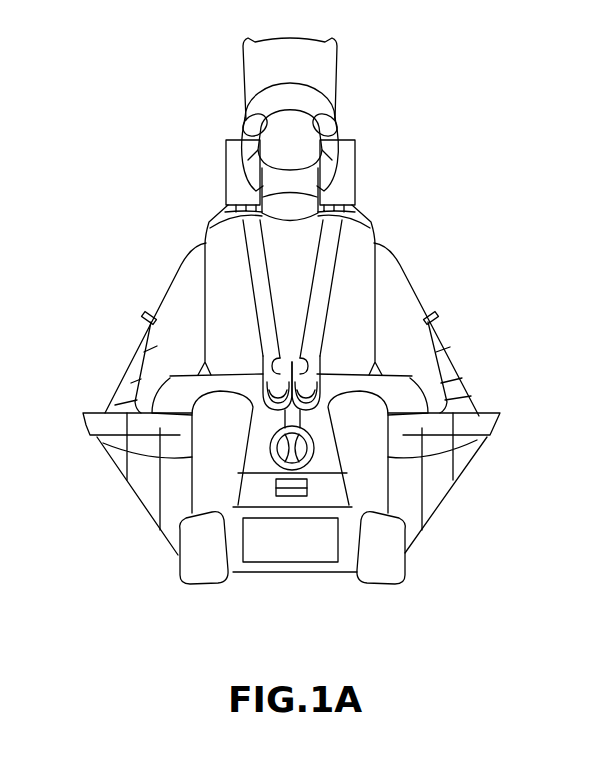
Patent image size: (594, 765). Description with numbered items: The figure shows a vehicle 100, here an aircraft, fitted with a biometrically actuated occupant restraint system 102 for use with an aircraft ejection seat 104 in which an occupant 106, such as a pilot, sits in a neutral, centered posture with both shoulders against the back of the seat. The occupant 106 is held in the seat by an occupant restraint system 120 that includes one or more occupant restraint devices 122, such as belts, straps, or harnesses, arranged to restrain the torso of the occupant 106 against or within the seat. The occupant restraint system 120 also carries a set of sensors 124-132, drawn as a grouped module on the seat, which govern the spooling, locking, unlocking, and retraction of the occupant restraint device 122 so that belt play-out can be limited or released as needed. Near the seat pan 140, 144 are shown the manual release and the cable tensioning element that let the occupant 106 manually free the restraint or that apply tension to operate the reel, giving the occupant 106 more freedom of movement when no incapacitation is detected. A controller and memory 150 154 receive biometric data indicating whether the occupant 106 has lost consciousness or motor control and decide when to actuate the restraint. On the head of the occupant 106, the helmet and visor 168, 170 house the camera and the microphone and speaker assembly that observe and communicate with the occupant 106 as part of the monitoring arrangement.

The vehicle 100 is at (324, 311).
The biometrically actuated occupant restraint system 102 is at (157, 158).
The aircraft ejection seat 104 is at (358, 173).
The occupant 106 is at (208, 240).
The occupant restraint system 120 is at (429, 278).
The occupant restraint device 122 is at (323, 253).
The sensors 124-132 is at (479, 308).
The seat pan 140, 144 is at (527, 467).
The controller and memory 150 154 is at (290, 540).
The helmet and visor 168, 170 is at (214, 105).